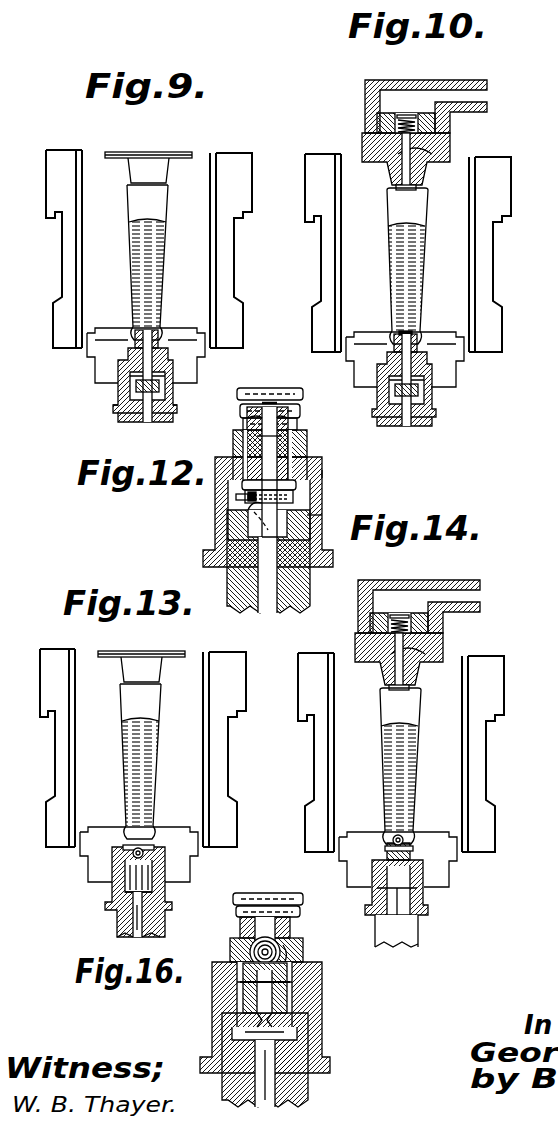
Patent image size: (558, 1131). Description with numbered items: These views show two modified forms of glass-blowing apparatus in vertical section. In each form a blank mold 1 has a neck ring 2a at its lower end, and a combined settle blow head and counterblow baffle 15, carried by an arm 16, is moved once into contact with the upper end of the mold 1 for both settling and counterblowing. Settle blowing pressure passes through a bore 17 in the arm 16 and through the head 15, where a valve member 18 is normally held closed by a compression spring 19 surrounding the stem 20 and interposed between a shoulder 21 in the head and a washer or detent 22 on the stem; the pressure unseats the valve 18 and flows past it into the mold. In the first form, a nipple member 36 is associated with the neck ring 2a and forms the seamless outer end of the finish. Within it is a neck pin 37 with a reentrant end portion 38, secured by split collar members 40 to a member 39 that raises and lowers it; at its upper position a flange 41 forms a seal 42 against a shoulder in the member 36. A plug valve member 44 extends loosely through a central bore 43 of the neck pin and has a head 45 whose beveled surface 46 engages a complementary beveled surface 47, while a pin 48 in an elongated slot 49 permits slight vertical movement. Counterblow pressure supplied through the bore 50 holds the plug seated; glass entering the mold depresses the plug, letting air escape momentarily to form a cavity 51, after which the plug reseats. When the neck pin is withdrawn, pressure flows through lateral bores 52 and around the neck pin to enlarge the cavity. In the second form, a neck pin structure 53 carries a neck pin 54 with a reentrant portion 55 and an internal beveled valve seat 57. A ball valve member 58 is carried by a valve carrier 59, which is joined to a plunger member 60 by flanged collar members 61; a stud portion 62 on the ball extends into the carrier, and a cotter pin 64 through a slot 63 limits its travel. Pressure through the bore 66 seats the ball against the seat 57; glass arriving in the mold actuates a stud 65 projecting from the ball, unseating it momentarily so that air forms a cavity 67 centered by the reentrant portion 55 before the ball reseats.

In FIG. 9, the mold 1 is at (222, 243).
In FIG. 10, the mold 1 is at (481, 247).
In FIG. 13, the mold 1 is at (215, 742).
In FIG. 14, the mold 1 is at (474, 742).
In FIG. 9, the neck ring 2a is at (187, 360).
In FIG. 10, the neck ring 2a is at (447, 358).
In FIG. 13, the neck ring 2a is at (178, 856).
In FIG. 14, the neck ring 2a is at (443, 860).
In FIG. 10, the head 15 is at (357, 139).
In FIG. 14, the head 15 is at (350, 643).
In FIG. 10, the arm 16 is at (468, 82).
In FIG. 14, the arm 16 is at (461, 582).
In FIG. 10, the bore 17 is at (487, 99).
In FIG. 14, the bore 17 is at (480, 598).
In FIG. 10, the valve member 18 is at (398, 191).
In FIG. 14, the valve member 18 is at (391, 691).
In FIG. 10, the compression spring 19 is at (380, 119).
In FIG. 14, the compression spring 19 is at (373, 617).
In FIG. 10, the stem 20 is at (409, 167).
In FIG. 14, the stem 20 is at (402, 667).
In FIG. 10, the shoulder 21 is at (425, 147).
In FIG. 14, the shoulder 21 is at (420, 648).
In FIG. 10, the washer or detent 22 is at (407, 116).
In FIG. 14, the washer or detent 22 is at (400, 616).
In FIG. 9, the nipple member 36 is at (127, 377).
In FIG. 10, the nipple member 36 is at (382, 370).
In FIG. 12, the nipple member 36 is at (322, 480).
In FIG. 9, the neck pin 37 is at (133, 336).
In FIG. 10, the neck pin 37 is at (390, 350).
In FIG. 12, the neck pin 37 is at (247, 428).
In FIG. 12, the reentrant end portion 38 is at (268, 390).
In FIG. 9, the member 39 is at (167, 420).
In FIG. 10, the member 39 is at (427, 425).
In FIG. 12, the member 39 is at (310, 585).
In FIG. 12, the split collar members 40 is at (322, 517).
In FIG. 12, the flange 41 is at (322, 470).
In FIG. 12, the seal 42 is at (233, 450).
In FIG. 12, the central longitudinal bore 43 is at (288, 418).
In FIG. 9, the plug valve member 44 is at (130, 357).
In FIG. 10, the plug valve member 44 is at (410, 368).
In FIG. 12, the plug valve member 44 is at (270, 440).
In FIG. 12, the head 45 is at (240, 520).
In FIG. 12, the beveled surface 46 is at (248, 495).
In FIG. 12, the complementary beveled surface 47 is at (296, 489).
In FIG. 12, the pin 48 is at (293, 500).
In FIG. 12, the vertically elongated slot 49 is at (217, 538).
In FIG. 9, the bore 50 is at (128, 418).
In FIG. 12, the bore 50 is at (270, 592).
In FIG. 10, the cavity 51 is at (410, 334).
In FIG. 12, the cavity 51 is at (276, 404).
In FIG. 12, the bores 52 is at (236, 497).
In FIG. 13, the neck pin structure 53 is at (113, 875).
In FIG. 14, the neck pin structure 53 is at (423, 895).
In FIG. 16, the neck pin structure 53 is at (322, 980).
In FIG. 13, the neck pin 54 is at (145, 845).
In FIG. 14, the neck pin 54 is at (404, 836).
In FIG. 16, the neck pin 54 is at (280, 940).
In FIG. 16, the reentrant portion 55 is at (248, 912).
In FIG. 16, the valve seat 57 is at (292, 944).
In FIG. 16, the ball valve member 58 is at (240, 946).
In FIG. 13, the valve carrier 59 is at (160, 878).
In FIG. 14, the valve carrier 59 is at (388, 872).
In FIG. 16, the valve carrier 59 is at (240, 1013).
In FIG. 13, the plunger member 60 is at (117, 918).
In FIG. 14, the plunger member 60 is at (402, 933).
In FIG. 16, the plunger member 60 is at (307, 1085).
In FIG. 13, the collar members 61 is at (113, 895).
In FIG. 14, the collar members 61 is at (410, 906).
In FIG. 16, the collar members 61 is at (227, 1038).
In FIG. 16, the stud portion 62 is at (300, 972).
In FIG. 16, the vertically elongated slot 63 is at (323, 997).
In FIG. 16, the transverse rod or cotter pin 64 is at (237, 992).
In FIG. 13, the stud 65 is at (123, 846).
In FIG. 14, the stud 65 is at (413, 848).
In FIG. 16, the stud 65 is at (247, 927).
In FIG. 13, the bore 66 is at (133, 930).
In FIG. 16, the bore 66 is at (255, 1082).
In FIG. 14, the cavity 67 is at (393, 840).